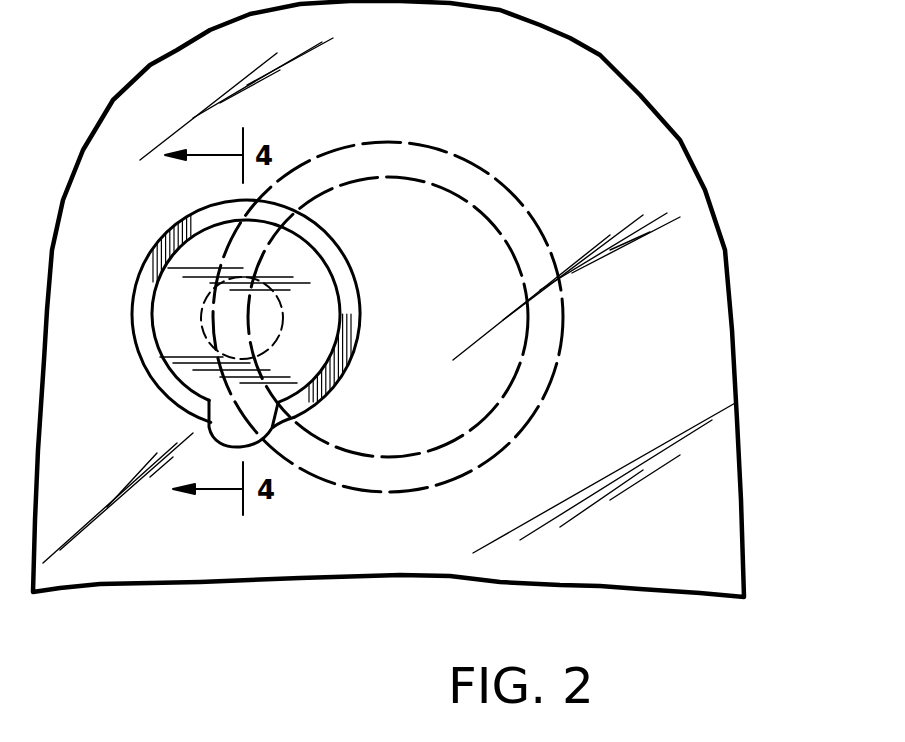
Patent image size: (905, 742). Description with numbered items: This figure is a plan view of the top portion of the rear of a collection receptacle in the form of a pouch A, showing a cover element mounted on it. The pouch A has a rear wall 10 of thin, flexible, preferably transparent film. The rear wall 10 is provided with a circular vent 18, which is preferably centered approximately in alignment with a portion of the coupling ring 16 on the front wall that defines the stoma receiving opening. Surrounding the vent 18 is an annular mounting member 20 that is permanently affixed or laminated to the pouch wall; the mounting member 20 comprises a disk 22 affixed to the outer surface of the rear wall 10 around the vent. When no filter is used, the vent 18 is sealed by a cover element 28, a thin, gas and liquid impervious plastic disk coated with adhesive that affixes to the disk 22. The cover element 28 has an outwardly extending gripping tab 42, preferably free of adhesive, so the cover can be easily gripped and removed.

The rear wall 10 is at (660, 160).
The coupling ring 16 is at (500, 200).
The vent 18 is at (298, 320).
The mounting member 20 is at (134, 277).
The disk 22 is at (337, 267).
The cover element 28 is at (171, 311).
The gripping tab 42 is at (209, 421).
The pouch A is at (733, 221).